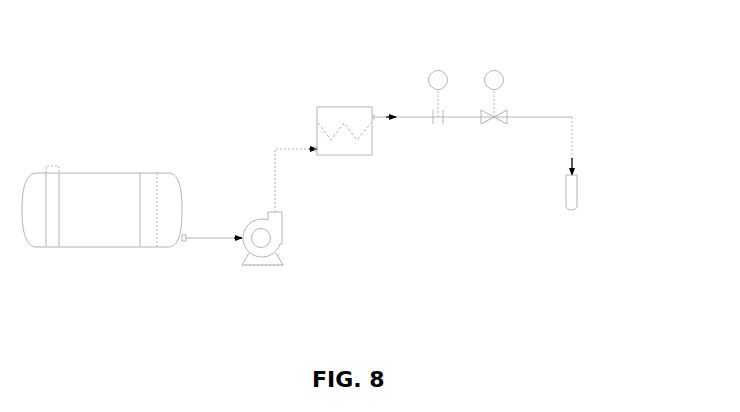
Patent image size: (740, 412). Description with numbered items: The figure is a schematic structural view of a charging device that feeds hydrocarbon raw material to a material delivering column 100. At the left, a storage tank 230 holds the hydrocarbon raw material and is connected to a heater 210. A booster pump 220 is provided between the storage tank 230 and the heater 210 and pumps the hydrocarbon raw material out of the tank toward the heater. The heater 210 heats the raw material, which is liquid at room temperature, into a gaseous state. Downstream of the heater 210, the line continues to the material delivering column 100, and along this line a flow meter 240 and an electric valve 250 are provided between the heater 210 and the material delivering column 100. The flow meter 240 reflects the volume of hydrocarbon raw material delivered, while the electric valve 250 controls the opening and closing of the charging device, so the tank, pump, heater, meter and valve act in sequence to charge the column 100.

The material delivering column 100 is at (590, 206).
The heater 210 is at (338, 90).
The booster pump 220 is at (266, 272).
The storage tank 230 is at (96, 146).
The flow meter 240 is at (438, 130).
The electric valve 250 is at (494, 60).